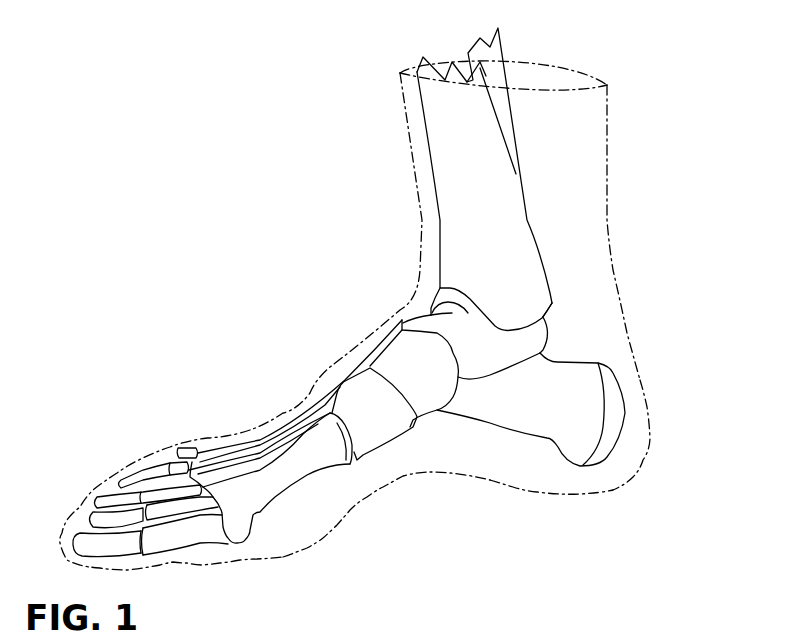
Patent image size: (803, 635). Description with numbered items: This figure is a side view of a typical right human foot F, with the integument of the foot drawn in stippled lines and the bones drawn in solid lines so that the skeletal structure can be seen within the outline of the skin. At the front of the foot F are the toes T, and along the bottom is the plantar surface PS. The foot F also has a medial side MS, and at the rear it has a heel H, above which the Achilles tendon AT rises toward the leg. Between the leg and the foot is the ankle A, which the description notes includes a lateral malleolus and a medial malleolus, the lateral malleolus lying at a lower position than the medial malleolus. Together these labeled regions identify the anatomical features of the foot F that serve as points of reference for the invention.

The human foot F is at (203, 165).
The toes T is at (160, 507).
The ankle A is at (493, 268).
The Achilles tendon AT is at (613, 293).
The heel H is at (652, 438).
The medial side MS is at (417, 450).
The plantar surface PS is at (512, 487).